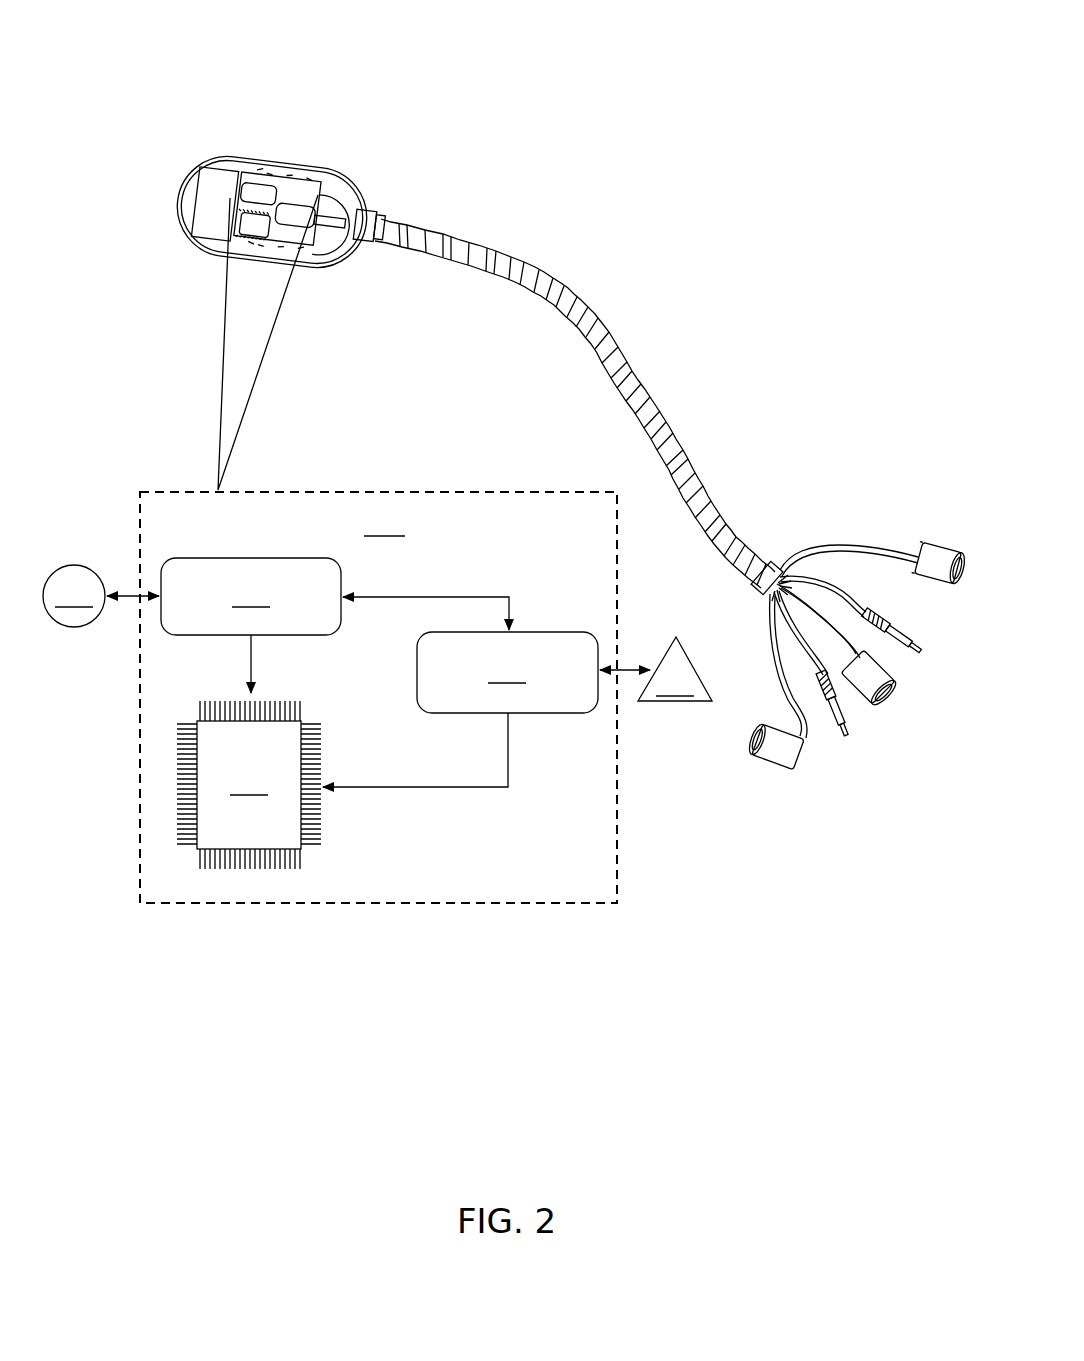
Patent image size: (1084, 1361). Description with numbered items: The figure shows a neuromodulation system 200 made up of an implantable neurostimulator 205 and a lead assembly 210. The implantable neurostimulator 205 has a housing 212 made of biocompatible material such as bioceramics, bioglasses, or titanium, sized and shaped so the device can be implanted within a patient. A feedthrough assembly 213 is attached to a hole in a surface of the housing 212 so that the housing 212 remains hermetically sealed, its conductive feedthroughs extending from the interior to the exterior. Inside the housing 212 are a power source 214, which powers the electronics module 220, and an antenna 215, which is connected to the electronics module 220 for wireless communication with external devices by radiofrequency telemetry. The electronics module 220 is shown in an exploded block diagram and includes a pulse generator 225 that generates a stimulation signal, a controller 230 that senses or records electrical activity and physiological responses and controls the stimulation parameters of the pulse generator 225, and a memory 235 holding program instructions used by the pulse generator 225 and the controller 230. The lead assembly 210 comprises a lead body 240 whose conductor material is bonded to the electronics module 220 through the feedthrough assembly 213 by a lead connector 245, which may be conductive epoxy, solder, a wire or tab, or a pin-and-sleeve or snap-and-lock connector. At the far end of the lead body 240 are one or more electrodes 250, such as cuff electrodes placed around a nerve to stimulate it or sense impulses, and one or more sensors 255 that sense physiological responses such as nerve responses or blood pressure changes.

The neuromodulation system 200 is at (564, 89).
The implantable neurostimulator 205 is at (170, 148).
The lead assembly 210 is at (654, 304).
The housing 212 is at (258, 193).
The feedthrough assembly 213 is at (332, 227).
The power source 214 is at (214, 204).
The antenna 215 is at (330, 221).
The electronics module 220 is at (295, 213).
The pulse generator 225 is at (251, 596).
The controller 230 is at (507, 672).
The memory 235 is at (249, 785).
The lead body 240 is at (673, 455).
The lead connector 245 is at (369, 225).
The electrodes 250 is at (858, 668).
The sensors 255 is at (923, 640).